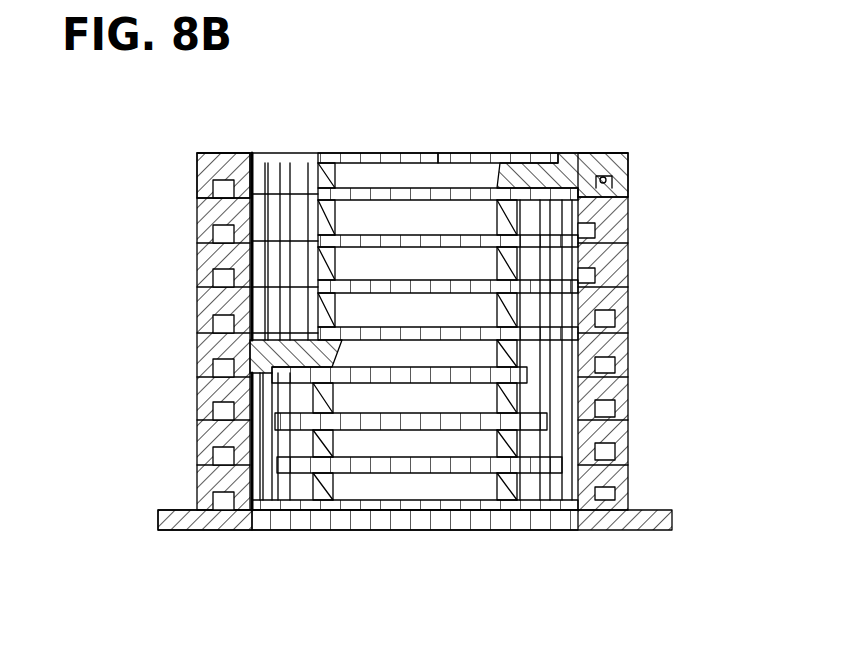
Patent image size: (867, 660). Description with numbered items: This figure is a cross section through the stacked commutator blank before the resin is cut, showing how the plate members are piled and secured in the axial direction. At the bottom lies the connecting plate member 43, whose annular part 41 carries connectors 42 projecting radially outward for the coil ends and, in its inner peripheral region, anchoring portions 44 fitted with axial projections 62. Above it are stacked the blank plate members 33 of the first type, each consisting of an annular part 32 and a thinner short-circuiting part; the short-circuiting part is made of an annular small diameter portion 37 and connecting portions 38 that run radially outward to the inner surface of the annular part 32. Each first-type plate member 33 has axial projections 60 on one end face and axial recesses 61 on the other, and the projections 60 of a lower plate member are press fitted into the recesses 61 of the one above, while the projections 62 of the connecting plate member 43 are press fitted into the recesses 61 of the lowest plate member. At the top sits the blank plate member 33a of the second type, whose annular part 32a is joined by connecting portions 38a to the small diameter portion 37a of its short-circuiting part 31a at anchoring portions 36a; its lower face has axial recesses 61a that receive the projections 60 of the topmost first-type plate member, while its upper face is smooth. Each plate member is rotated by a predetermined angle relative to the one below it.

The short-circuiting part 31a is at (412, 110).
The annular part 32 is at (192, 331).
The annular part 32a is at (200, 178).
The blank plate member of first type 33 is at (643, 330).
The blank plate member of second type 33a is at (628, 172).
The anchoring portion 36a is at (584, 158).
The small diameter portion 37 is at (500, 350).
The small diameter portion 37a is at (330, 152).
The connecting portion 38 is at (298, 353).
The connecting portion 38a is at (498, 130).
The annular part 41 is at (615, 530).
The connector 42 is at (663, 547).
The connecting plate member 43 is at (423, 565).
The anchoring portion 44 is at (588, 530).
The axial projection 60 is at (605, 228).
The axial recess 61 is at (610, 240).
The axial recess 61a is at (604, 172).
The axial projection 62 is at (612, 495).